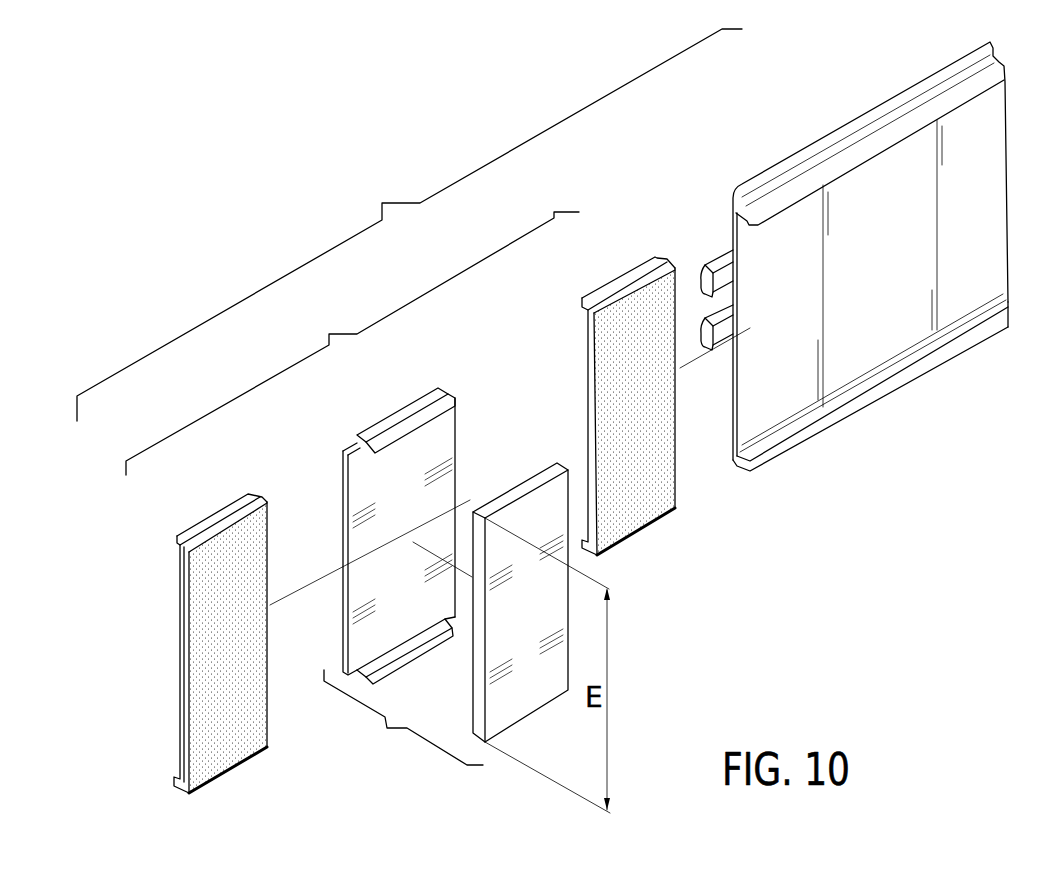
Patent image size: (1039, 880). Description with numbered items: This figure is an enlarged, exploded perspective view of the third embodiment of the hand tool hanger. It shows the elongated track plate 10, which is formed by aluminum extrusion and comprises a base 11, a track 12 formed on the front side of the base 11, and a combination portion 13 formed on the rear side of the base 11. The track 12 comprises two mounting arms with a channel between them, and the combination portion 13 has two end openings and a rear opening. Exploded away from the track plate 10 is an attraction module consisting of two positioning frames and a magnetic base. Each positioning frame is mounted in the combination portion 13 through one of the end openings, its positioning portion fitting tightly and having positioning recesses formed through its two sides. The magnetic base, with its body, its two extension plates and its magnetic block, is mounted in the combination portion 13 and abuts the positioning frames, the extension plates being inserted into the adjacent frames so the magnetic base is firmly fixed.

The track plate 10 is at (767, 157).
The base 11 is at (862, 126).
The track 12 is at (707, 250).
The combination portion 13 is at (901, 389).